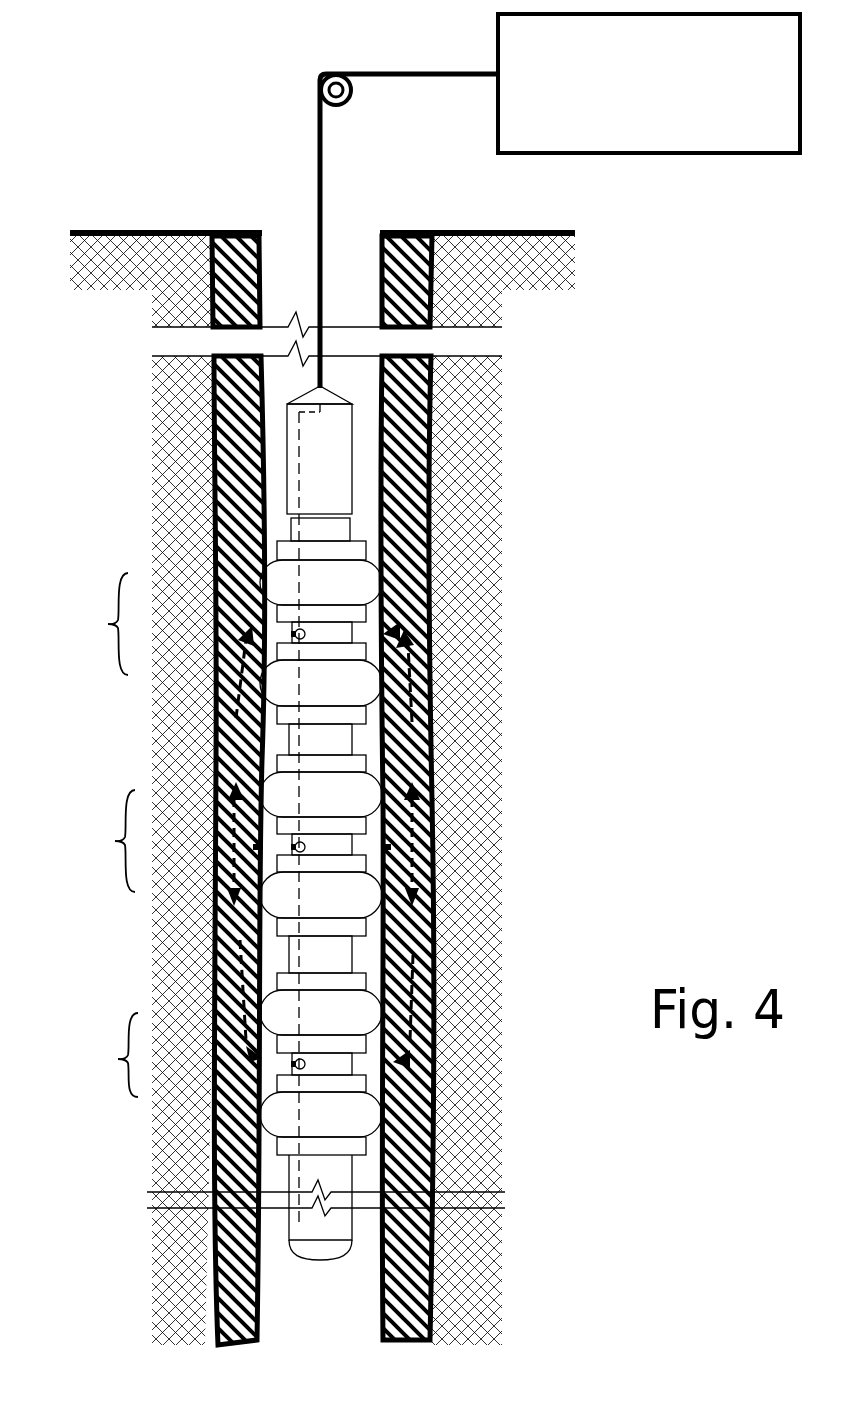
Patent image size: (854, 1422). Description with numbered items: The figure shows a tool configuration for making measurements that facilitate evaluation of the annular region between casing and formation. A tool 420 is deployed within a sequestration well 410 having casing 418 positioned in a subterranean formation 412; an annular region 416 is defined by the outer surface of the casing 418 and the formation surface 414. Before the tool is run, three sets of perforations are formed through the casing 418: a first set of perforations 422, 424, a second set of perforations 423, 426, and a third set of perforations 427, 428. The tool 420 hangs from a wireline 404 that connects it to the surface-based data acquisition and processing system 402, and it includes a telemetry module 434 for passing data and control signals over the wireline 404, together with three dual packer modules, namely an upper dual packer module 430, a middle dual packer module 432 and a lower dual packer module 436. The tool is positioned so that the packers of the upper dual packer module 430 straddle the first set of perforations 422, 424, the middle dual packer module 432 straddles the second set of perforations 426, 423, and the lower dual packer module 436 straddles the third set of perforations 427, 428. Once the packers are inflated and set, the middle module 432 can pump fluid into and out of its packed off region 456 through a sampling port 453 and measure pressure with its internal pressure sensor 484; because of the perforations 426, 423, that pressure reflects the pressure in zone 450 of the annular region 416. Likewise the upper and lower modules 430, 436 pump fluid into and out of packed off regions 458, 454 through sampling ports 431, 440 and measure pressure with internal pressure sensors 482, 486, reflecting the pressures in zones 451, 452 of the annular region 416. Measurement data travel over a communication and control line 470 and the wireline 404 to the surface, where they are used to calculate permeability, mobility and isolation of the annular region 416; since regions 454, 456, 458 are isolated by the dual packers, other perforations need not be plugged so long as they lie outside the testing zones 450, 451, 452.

The data acquisition and processing system 402 is at (560, 144).
The wireline 404 is at (320, 172).
The sequestration well 410 is at (372, 279).
The subterranean formation 412 is at (495, 416).
The formation surface 414 is at (440, 472).
The annular region 416 is at (240, 480).
The casing 418 is at (432, 540).
The tool 420 is at (270, 467).
The perforation 422 is at (295, 634).
The perforation 423 is at (392, 846).
The perforation 424 is at (396, 632).
The perforation 426 is at (280, 846).
The perforation 427 is at (405, 1060).
The perforation 428 is at (224, 1103).
The upper dual packer module 430 is at (362, 598).
The sampling port 431 is at (213, 740).
The middle dual packer module 432 is at (362, 810).
The telemetry module 434 is at (352, 498).
The lower dual packer module 436 is at (362, 1028).
The sampling port 440 is at (295, 1064).
The zone 450 is at (244, 844).
The zone 451 is at (238, 647).
The zone 452 is at (241, 1018).
The sampling port 453 is at (295, 847).
The packed off region 454 is at (372, 1076).
The packed off region 456 is at (376, 866).
The packed off region 458 is at (372, 652).
The communication and control line 470 is at (272, 1128).
The internal pressure sensor 482 is at (305, 636).
The internal pressure sensor 484 is at (305, 849).
The internal pressure sensor 486 is at (305, 1066).